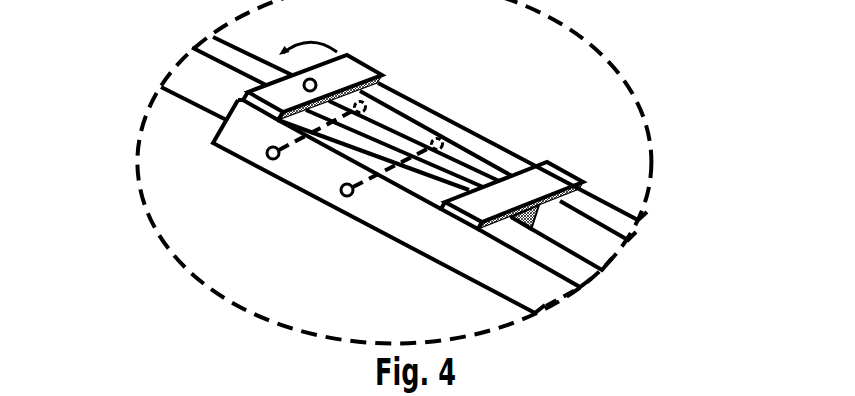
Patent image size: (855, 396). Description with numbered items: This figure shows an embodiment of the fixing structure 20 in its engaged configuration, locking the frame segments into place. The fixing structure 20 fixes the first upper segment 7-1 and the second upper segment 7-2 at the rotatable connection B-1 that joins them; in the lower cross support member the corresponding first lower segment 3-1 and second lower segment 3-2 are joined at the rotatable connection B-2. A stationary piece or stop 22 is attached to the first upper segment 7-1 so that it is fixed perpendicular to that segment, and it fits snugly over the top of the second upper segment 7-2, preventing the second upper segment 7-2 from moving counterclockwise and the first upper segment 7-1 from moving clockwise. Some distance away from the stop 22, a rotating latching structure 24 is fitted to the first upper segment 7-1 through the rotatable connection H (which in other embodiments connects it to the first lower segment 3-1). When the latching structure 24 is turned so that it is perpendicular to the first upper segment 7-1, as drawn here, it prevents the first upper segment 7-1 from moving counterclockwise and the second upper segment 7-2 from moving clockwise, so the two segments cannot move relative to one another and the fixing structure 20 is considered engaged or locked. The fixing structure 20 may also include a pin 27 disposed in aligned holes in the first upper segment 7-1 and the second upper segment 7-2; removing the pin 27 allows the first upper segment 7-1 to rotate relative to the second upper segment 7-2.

The fixing structure 20 is at (613, 65).
The first upper segment 7-1 is at (202, 78).
The first lower segment 3-1 is at (134, 84).
The second upper segment 7-2 is at (593, 236).
The second lower segment 3-2 is at (535, 282).
The latching structure 24 is at (360, 73).
The stop 22 is at (533, 175).
The rotatable connection H is at (315, 82).
The pin 27 is at (268, 156).
The rotatable connection B-1 is at (285, 164).
The rotatable connection B-2 is at (342, 194).